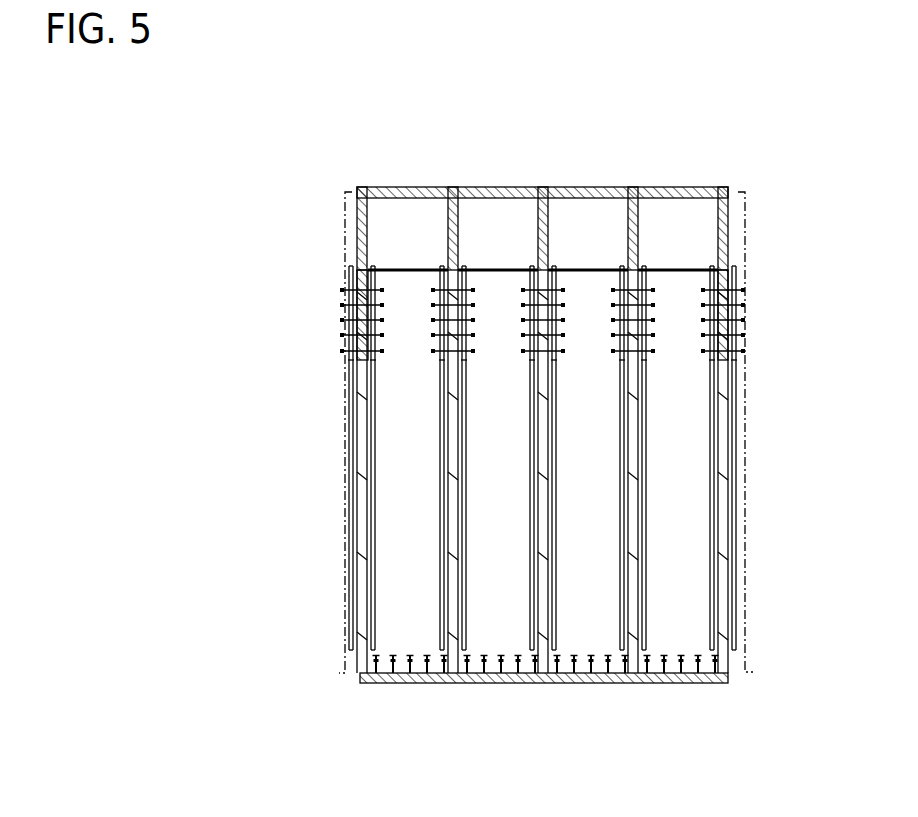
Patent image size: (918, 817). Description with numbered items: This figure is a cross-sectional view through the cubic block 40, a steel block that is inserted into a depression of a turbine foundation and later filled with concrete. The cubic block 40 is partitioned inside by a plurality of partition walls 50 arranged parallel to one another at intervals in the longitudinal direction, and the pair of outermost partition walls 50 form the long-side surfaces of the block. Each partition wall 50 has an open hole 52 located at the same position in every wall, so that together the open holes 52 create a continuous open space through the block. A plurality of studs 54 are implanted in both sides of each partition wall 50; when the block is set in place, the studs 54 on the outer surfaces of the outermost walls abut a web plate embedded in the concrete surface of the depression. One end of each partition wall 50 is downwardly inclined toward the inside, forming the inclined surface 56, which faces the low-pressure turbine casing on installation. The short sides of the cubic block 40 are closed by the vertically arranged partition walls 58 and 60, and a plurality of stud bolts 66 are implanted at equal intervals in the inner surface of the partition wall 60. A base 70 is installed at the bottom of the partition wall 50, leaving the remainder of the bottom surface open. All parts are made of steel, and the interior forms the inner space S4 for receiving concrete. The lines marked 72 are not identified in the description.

The cubic block 40 is at (520, 156).
The partition wall 50 is at (725, 436).
The open hole 52 is at (722, 362).
The stud 54 is at (632, 360).
The inclined surface 56 is at (657, 245).
The partition wall 58 is at (483, 268).
The partition wall 60 is at (583, 684).
The stud bolt 66 is at (667, 658).
The base 70 is at (645, 495).
The outer boundary 72 is at (349, 668).
The inner space S4 is at (521, 450).